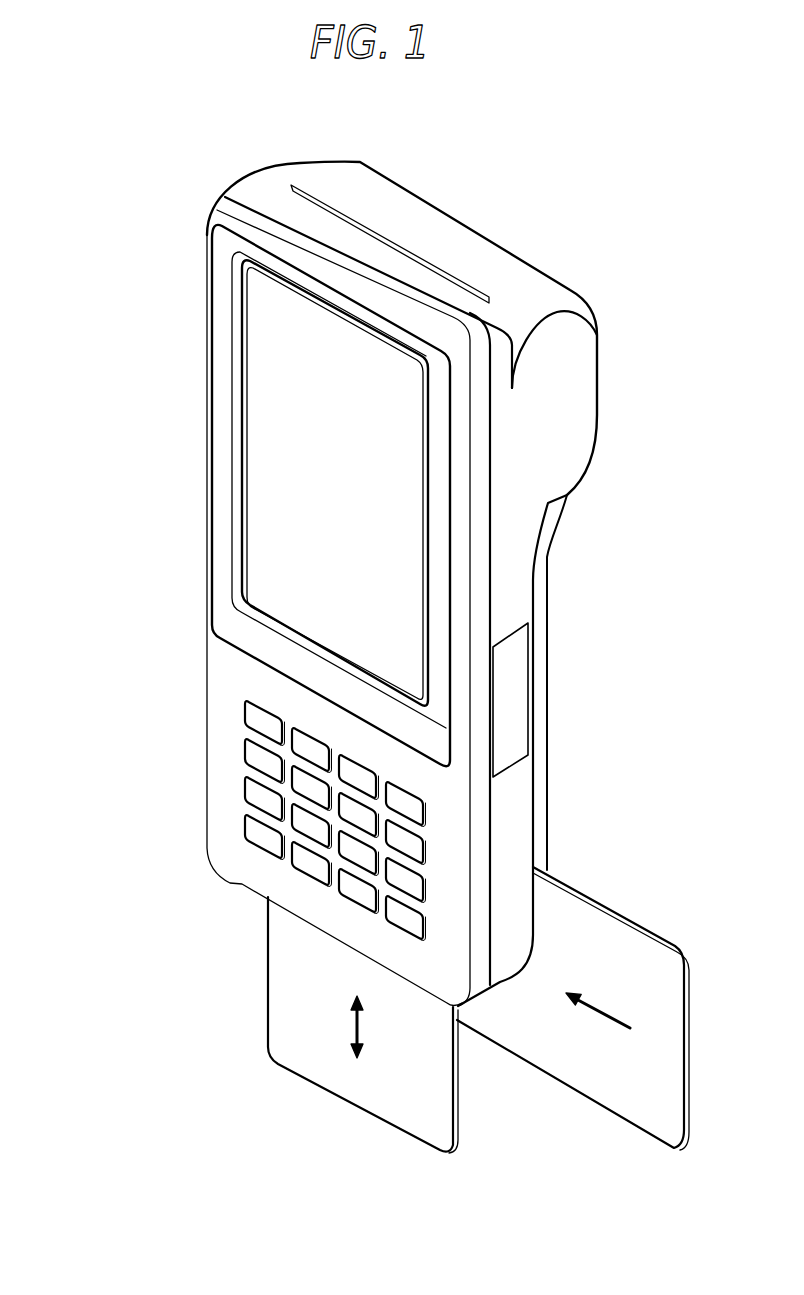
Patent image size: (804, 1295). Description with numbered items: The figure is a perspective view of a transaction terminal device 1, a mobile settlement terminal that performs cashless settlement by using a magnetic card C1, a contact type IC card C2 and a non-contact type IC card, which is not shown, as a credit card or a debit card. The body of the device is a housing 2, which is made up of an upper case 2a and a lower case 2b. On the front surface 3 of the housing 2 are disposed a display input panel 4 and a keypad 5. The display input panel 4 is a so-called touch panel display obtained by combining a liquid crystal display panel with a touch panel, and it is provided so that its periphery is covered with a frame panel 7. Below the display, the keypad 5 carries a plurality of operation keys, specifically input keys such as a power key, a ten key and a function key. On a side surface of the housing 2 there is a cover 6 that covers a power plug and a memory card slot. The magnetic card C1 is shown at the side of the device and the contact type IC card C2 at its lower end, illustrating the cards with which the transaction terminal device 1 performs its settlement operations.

The transaction terminal device 1 is at (472, 190).
The housing 2 is at (132, 129).
The upper case 2a is at (221, 201).
The lower case 2b is at (281, 168).
The front surface 3 is at (228, 689).
The display input panel 4 is at (263, 428).
The keypad 5 is at (232, 802).
The cover 6 is at (513, 699).
The frame panel 7 is at (218, 536).
The magnetic card C1 is at (620, 912).
The contact type IC card C2 is at (268, 988).